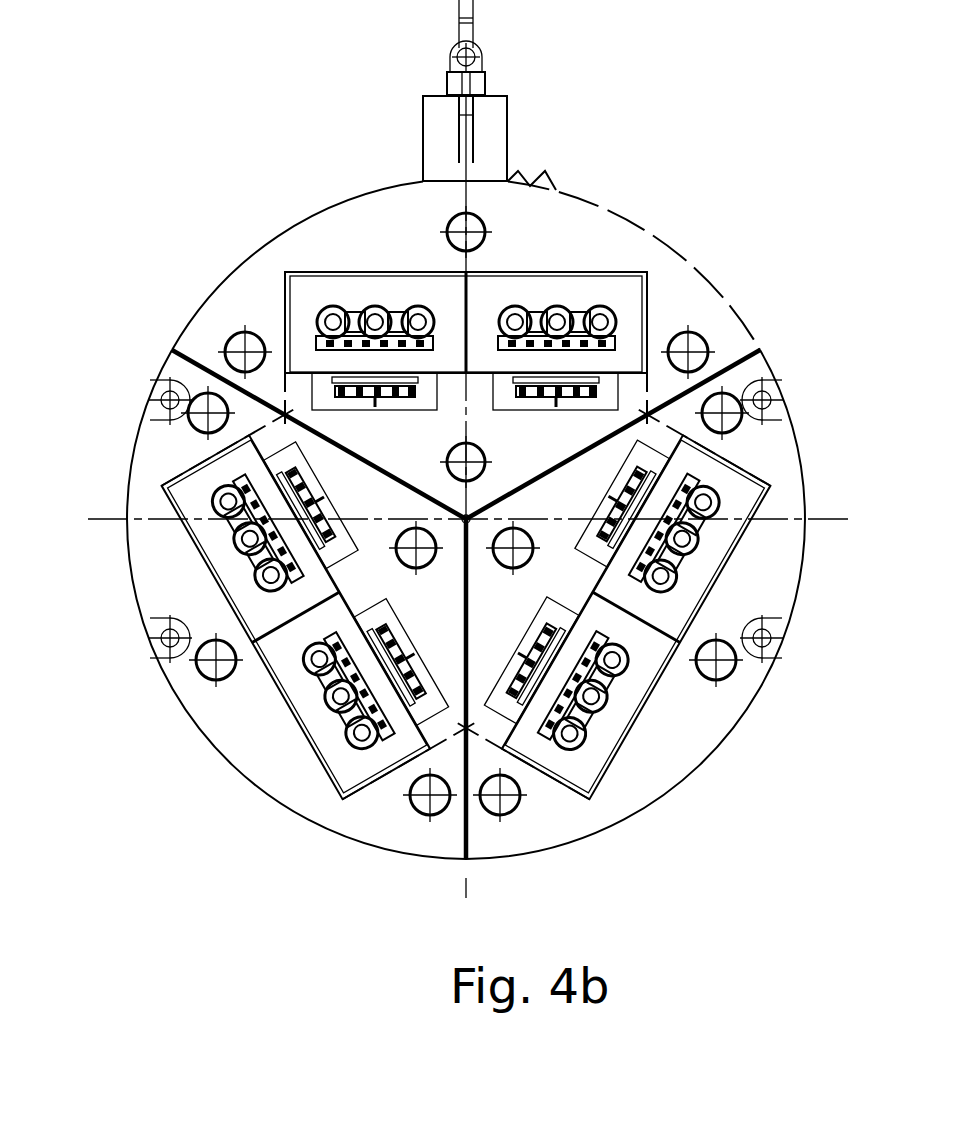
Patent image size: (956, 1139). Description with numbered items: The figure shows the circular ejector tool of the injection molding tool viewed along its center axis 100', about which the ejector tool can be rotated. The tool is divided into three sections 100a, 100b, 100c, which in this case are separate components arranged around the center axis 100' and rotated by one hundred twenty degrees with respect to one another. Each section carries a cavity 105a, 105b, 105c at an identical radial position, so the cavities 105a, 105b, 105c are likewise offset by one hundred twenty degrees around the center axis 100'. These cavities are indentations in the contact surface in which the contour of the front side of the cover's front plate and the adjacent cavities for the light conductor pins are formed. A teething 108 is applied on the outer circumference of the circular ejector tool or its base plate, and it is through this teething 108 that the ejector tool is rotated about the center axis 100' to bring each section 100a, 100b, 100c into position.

The section 100a is at (721, 230).
The section 100b is at (188, 766).
The section 100c is at (630, 845).
The center axis 100' is at (518, 471).
The cavity 105a is at (500, 315).
The cavity 105b is at (300, 658).
The cavity 105c is at (627, 660).
The teething 108 is at (567, 153).